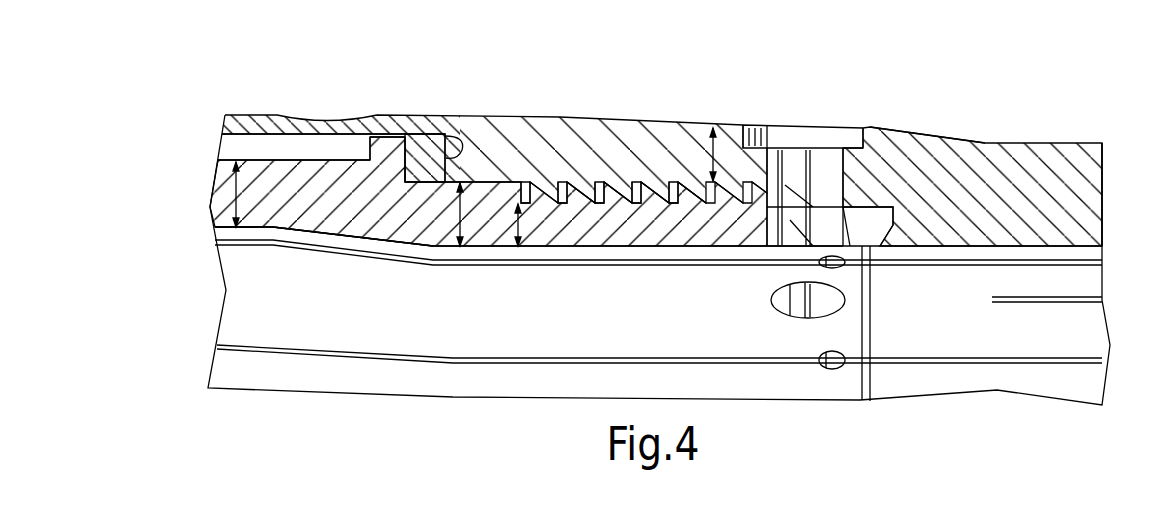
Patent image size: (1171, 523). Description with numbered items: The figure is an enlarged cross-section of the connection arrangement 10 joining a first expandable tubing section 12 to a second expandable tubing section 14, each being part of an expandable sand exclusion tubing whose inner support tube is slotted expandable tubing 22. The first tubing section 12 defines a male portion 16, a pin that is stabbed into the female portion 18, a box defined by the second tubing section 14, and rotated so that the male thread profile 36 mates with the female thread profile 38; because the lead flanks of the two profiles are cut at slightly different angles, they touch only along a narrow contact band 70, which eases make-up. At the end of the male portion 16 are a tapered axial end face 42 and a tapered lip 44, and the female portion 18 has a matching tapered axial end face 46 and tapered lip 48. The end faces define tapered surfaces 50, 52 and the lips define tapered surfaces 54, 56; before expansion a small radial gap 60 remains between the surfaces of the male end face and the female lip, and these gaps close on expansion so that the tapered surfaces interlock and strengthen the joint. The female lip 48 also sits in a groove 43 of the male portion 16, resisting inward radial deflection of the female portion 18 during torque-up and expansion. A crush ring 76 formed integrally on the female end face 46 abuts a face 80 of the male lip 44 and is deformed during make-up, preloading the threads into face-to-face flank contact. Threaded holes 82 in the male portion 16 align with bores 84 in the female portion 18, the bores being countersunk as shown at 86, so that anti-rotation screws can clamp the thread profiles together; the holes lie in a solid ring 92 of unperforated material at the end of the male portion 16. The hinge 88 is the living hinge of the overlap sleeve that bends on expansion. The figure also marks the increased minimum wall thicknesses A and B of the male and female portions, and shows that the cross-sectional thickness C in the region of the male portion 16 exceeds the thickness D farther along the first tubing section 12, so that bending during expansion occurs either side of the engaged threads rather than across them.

The connection arrangement 10 is at (840, 65).
The first expandable tubing section 12 is at (220, 88).
The second expandable tubing section 14 is at (1032, 127).
The male portion 16 is at (494, 170).
The female portion 18 is at (491, 115).
The expandable tubing 22 is at (1086, 178).
The male thread profile 36 is at (645, 181).
The female thread profile 38 is at (590, 182).
The tapered axial end face 42 is at (878, 228).
The groove 43 is at (842, 232).
The tapered lip 44 is at (376, 128).
The tapered axial end face 46 is at (416, 170).
The tapered lip 48 is at (879, 245).
The tapered surface 50 is at (896, 240).
The tapered surface 52 is at (456, 140).
The tapered surface 54 is at (420, 134).
The tapered surface 56 is at (884, 214).
The radial gap 60 is at (862, 242).
The contact band 70 is at (613, 175).
The crush ring 76 is at (352, 228).
The face of the lip 80 is at (414, 150).
The threaded hole 82 is at (795, 230).
The bore 84 is at (798, 165).
The countersunk portion 86 is at (758, 133).
The hinge 88 is at (323, 116).
The solid ring 92 is at (852, 382).
The minimum wall thickness A is at (520, 210).
The minimum wall thickness B is at (716, 127).
The cross-sectional thickness C is at (462, 210).
The thickness D is at (240, 200).